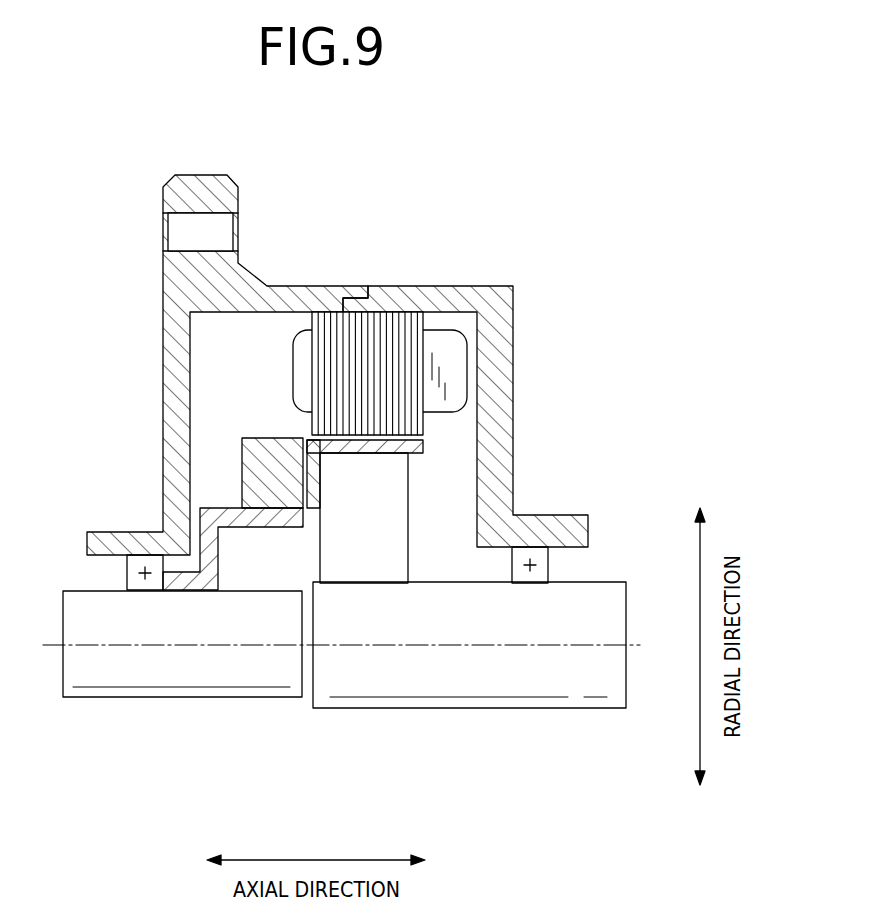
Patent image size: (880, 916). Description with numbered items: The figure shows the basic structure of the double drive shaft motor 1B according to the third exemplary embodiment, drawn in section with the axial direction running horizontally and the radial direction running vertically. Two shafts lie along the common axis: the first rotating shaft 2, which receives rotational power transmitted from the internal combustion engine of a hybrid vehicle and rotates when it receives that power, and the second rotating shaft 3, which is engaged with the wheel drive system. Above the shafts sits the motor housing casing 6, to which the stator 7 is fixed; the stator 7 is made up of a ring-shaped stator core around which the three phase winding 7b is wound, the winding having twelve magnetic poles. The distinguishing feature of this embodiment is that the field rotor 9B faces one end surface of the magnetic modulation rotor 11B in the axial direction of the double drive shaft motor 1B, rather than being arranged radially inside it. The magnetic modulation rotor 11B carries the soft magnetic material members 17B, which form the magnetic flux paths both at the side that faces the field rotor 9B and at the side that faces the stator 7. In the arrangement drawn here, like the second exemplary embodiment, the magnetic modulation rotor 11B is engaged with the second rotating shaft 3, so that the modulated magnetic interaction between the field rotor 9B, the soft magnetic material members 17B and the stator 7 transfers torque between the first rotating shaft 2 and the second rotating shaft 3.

The double drive shaft motor 1B is at (488, 210).
The first rotating shaft 2 is at (100, 678).
The second rotating shaft 3 is at (570, 687).
The motor housing casing 6 is at (175, 277).
The stator 7 is at (432, 323).
The three phase winding 7b is at (450, 372).
The field rotor 9B is at (258, 481).
The magnetic modulation rotor 11B is at (417, 487).
The soft magnetic material members 17B is at (368, 447).